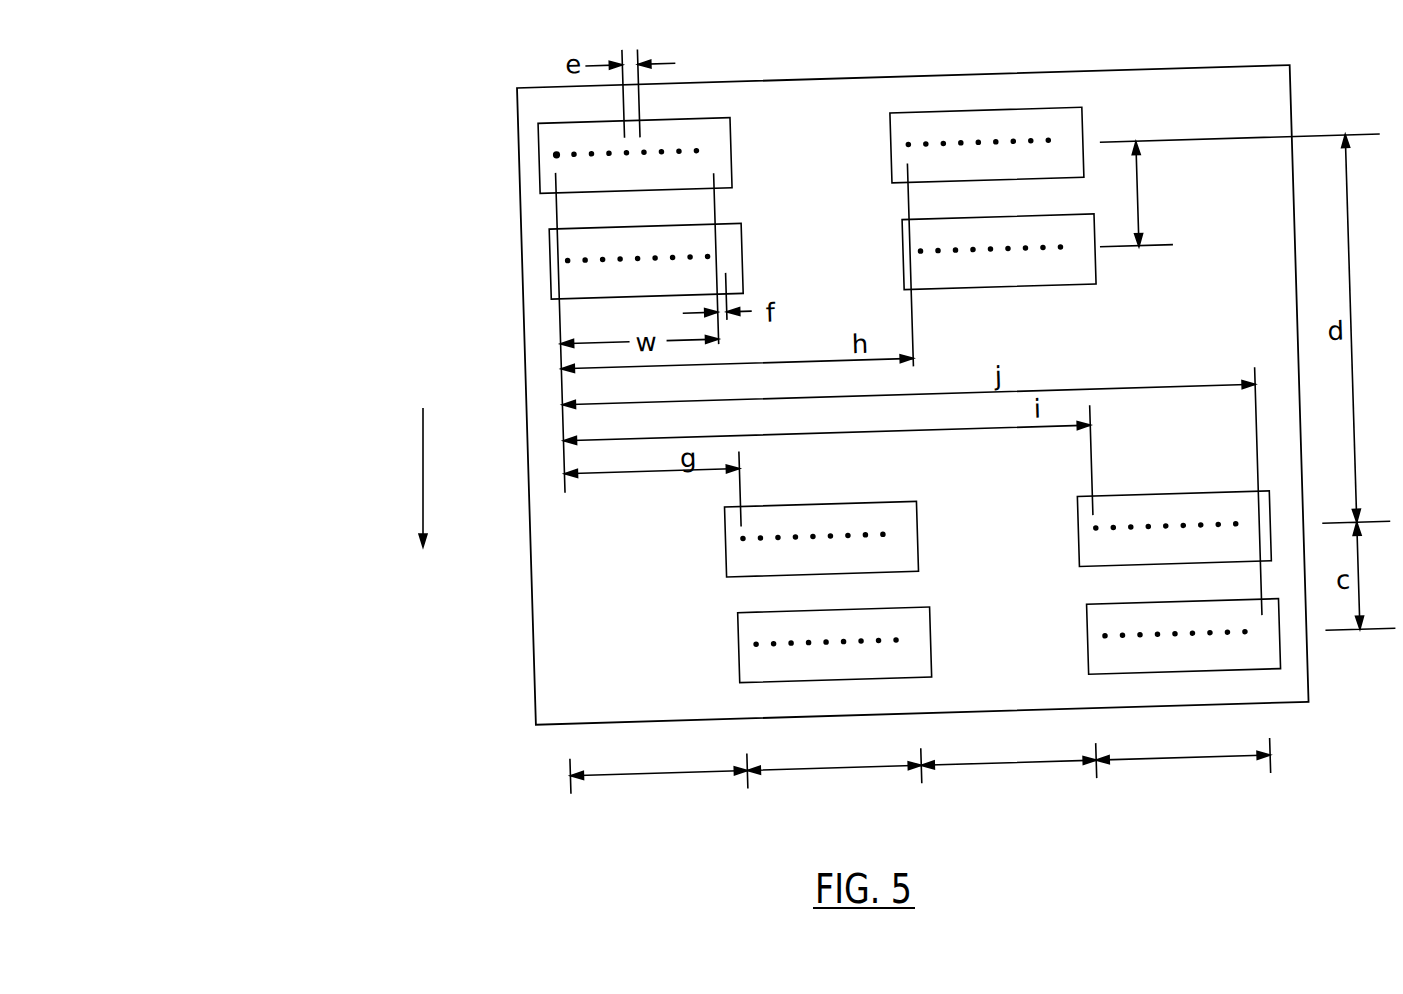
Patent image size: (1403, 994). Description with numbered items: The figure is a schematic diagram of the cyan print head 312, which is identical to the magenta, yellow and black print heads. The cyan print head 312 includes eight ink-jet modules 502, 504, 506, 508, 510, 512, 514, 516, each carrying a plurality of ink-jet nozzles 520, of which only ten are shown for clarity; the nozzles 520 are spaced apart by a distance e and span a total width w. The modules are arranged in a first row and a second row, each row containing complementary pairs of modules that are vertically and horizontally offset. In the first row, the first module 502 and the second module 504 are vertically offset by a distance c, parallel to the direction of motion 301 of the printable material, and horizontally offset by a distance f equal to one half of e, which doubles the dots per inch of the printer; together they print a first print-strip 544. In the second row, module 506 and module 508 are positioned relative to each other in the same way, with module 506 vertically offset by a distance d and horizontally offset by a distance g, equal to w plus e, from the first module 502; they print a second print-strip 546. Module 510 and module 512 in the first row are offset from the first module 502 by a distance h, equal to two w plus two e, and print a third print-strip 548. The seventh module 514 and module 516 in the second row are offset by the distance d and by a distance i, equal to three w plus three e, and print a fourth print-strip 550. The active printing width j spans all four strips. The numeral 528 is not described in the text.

The cyan print head 312 is at (266, 87).
The direction of motion of the printable material 301 is at (425, 482).
The first module 502 is at (538, 177).
The second module 504 is at (550, 282).
The first module of the second row 506 is at (725, 550).
The second module of the second row 508 is at (738, 667).
The module 510 is at (890, 165).
The module 512 is at (902, 272).
The seventh module 514 is at (1077, 550).
The module 516 is at (1087, 655).
The ink-jet nozzles 520 is at (562, 146).
The die spacing c 528 is at (1140, 193).
The first print-strip 544 is at (645, 777).
The second print-strip 546 is at (820, 772).
The third print-strip 548 is at (997, 767).
The fourth print-strip 550 is at (1170, 763).